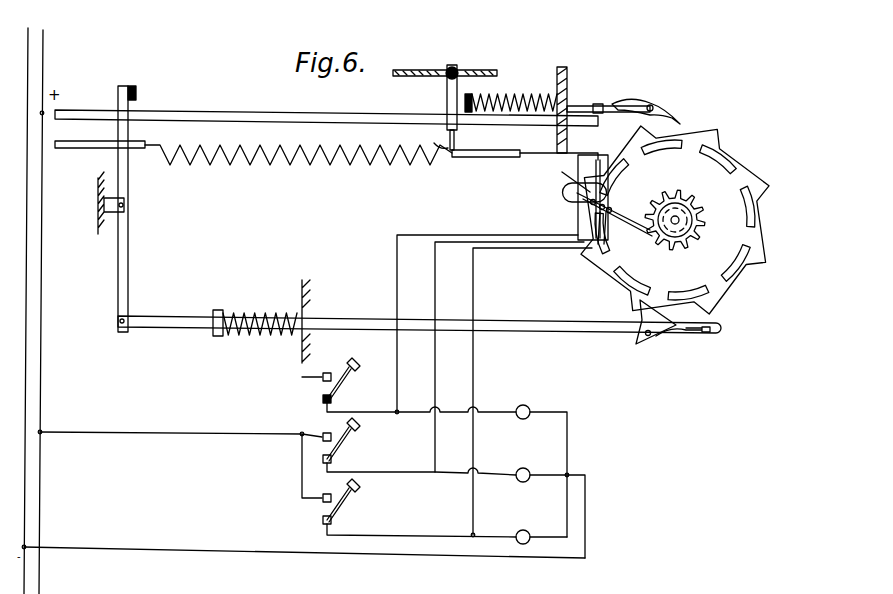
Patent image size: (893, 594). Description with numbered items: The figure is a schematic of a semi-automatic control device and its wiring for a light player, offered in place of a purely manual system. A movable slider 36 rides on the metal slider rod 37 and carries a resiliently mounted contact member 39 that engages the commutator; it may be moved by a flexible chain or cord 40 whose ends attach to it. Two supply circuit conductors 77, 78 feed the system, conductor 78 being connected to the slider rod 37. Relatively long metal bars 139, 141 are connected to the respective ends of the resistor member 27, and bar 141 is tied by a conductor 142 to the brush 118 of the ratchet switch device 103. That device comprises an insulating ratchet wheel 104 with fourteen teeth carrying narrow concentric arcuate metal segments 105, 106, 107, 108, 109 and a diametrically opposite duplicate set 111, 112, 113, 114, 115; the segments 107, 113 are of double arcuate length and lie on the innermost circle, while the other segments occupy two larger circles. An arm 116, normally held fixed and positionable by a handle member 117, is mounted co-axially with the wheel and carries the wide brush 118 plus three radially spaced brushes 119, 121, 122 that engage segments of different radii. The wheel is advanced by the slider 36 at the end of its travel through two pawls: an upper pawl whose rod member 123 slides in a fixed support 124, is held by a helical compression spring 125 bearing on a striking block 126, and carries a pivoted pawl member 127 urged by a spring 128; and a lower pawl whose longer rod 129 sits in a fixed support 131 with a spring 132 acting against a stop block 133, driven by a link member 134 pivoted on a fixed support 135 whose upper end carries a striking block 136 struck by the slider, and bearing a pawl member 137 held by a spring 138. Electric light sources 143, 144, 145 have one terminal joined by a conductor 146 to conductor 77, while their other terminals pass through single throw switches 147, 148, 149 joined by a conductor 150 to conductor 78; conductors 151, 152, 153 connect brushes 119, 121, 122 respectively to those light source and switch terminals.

The supply circuit conductor 77 is at (30, 40).
The supply circuit conductor 78 is at (44, 62).
The slider rod 37 is at (208, 108).
The striking block 136 is at (136, 96).
The link member 134 is at (128, 264).
The fixed support 135 is at (100, 220).
The metal bar 139 is at (98, 148).
The resistor member 27 is at (307, 168).
The flexible chain or cord 40 is at (436, 68).
The movable slider 36 is at (446, 97).
The contact member 39 is at (456, 142).
The striking block 126 is at (468, 94).
The helical compression spring 125 is at (498, 95).
The fixed support 124 is at (560, 68).
The rod member 123 is at (576, 104).
The spring 128 is at (598, 103).
The pawl member 127 is at (632, 100).
The metal bar 141 is at (490, 158).
The conductor 142 is at (550, 138).
The ratchet switch device 103 is at (780, 133).
The ratchet wheel 104 is at (762, 188).
The arcuate metal segment 105 is at (626, 128).
The arcuate metal segment 106 is at (676, 132).
The arcuate metal segment 107 is at (718, 150).
The arcuate metal segment 108 is at (758, 212).
The arcuate metal segment 109 is at (752, 228).
The arcuate metal segment 111 is at (722, 288).
The arcuate metal segment 112 is at (700, 296).
The arcuate metal segment 113 is at (636, 280).
The arcuate metal segment 114 is at (605, 258).
The handle member 117 is at (676, 248).
The arcuate metal segment 115 is at (578, 224).
The arm 116 is at (572, 190).
The contact brush 118 is at (585, 183).
The contact brush 119 is at (604, 202).
The contact brush 121 is at (608, 205).
The contact brush 122 is at (608, 225).
The conductor 151 is at (412, 236).
The conductor 152 is at (436, 290).
The conductor 153 is at (474, 302).
The rod 129 is at (326, 318).
The stop block 133 is at (216, 310).
The spring 132 is at (256, 312).
The fixed support 131 is at (300, 288).
The pawl member 137 is at (640, 340).
The spring 138 is at (676, 338).
The conductor 150 is at (152, 432).
The single throw switch 147 is at (340, 386).
The single throw switch 148 is at (345, 448).
The single throw switch 149 is at (345, 508).
The electric light source 143 is at (530, 405).
The electric light source 144 is at (528, 468).
The electric light source 145 is at (528, 530).
The conductor 146 is at (240, 556).